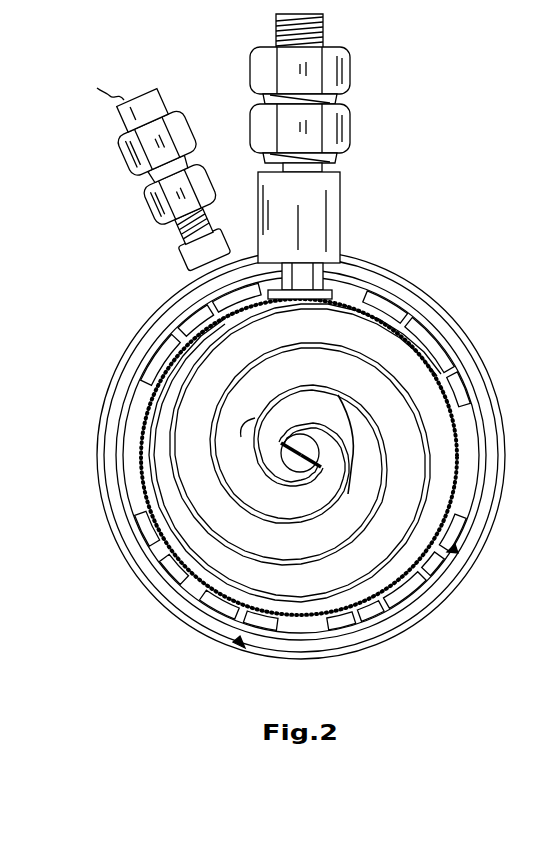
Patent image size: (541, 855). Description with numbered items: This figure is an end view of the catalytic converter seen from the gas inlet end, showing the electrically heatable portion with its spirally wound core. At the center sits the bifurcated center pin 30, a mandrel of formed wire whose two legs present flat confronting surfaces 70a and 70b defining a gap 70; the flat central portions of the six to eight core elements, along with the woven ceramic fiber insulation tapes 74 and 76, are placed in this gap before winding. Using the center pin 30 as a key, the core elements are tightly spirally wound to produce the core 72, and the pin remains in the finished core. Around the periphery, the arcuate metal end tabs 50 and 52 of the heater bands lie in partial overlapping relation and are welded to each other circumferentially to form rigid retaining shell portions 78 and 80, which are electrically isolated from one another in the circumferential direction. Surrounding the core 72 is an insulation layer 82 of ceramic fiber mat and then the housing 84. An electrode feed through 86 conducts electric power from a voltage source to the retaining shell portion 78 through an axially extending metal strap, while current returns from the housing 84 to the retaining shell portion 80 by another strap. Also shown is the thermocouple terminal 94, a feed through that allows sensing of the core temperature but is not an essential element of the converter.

The bifurcated center pin 30 is at (304, 440).
The arcuate metal end tab 50 is at (452, 558).
The arcuate metal end tab 52 is at (205, 310).
The gap 70 is at (296, 469).
The flat confronting surface 70a is at (300, 455).
The flat confronting surface 70b is at (300, 455).
The core 72 is at (428, 421).
The woven ceramic fiber insulation tape 74 is at (348, 494).
The woven ceramic fiber insulation tape 76 is at (239, 440).
The retaining shell portion 78 is at (360, 288).
The retaining shell portion 80 is at (236, 646).
The insulation layer 82 is at (488, 487).
The housing 84 is at (480, 540).
The electrode feed through 86 is at (350, 191).
The thermocouple terminal 94 is at (208, 155).